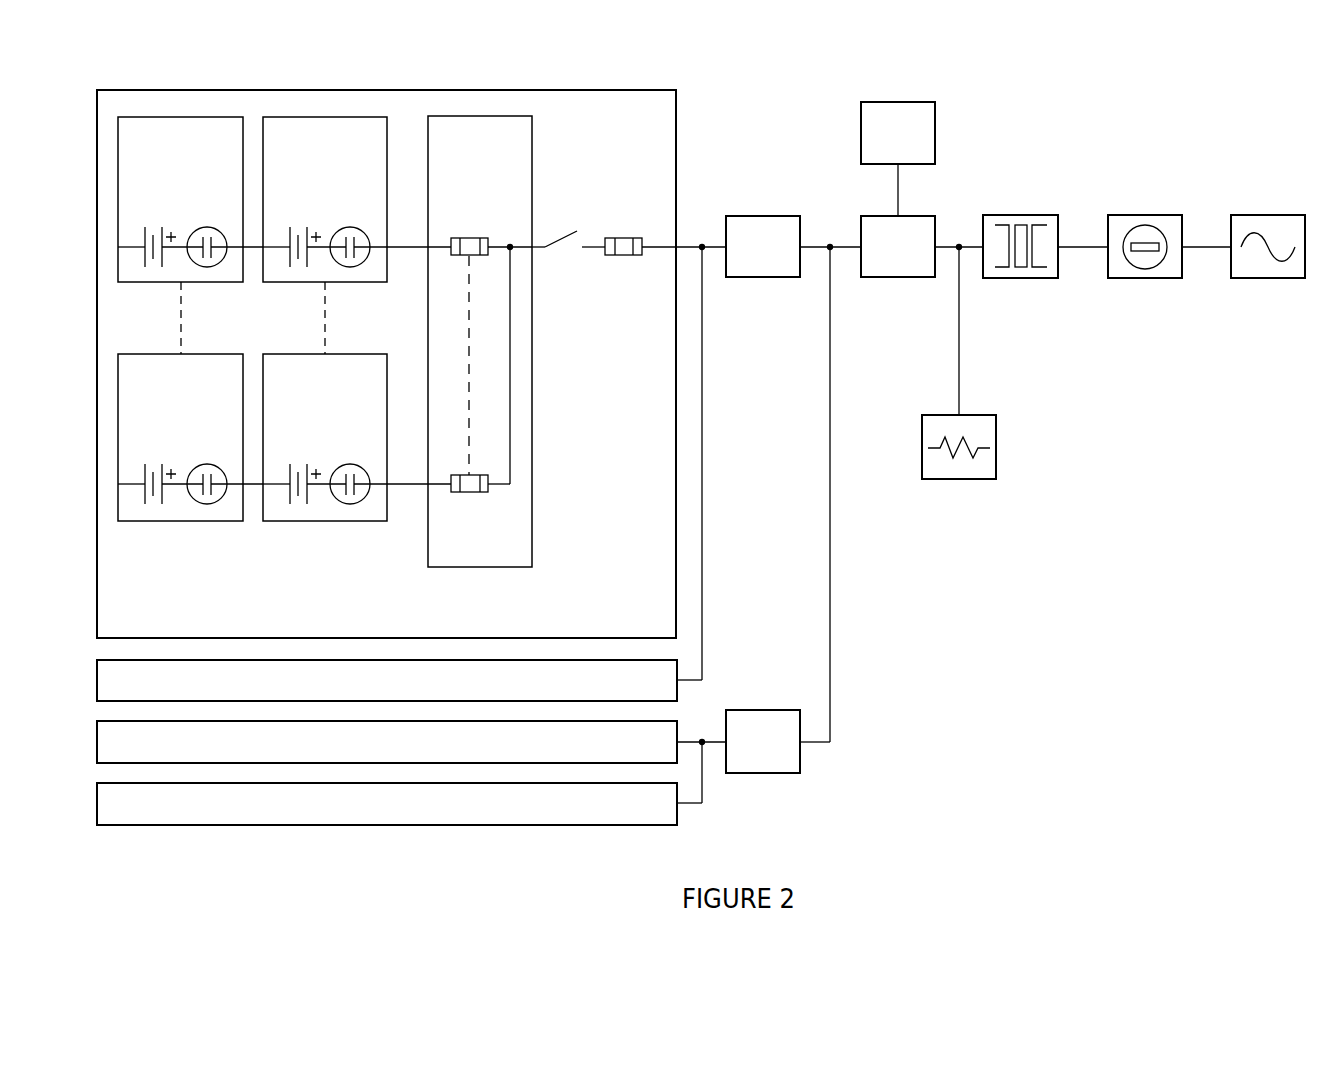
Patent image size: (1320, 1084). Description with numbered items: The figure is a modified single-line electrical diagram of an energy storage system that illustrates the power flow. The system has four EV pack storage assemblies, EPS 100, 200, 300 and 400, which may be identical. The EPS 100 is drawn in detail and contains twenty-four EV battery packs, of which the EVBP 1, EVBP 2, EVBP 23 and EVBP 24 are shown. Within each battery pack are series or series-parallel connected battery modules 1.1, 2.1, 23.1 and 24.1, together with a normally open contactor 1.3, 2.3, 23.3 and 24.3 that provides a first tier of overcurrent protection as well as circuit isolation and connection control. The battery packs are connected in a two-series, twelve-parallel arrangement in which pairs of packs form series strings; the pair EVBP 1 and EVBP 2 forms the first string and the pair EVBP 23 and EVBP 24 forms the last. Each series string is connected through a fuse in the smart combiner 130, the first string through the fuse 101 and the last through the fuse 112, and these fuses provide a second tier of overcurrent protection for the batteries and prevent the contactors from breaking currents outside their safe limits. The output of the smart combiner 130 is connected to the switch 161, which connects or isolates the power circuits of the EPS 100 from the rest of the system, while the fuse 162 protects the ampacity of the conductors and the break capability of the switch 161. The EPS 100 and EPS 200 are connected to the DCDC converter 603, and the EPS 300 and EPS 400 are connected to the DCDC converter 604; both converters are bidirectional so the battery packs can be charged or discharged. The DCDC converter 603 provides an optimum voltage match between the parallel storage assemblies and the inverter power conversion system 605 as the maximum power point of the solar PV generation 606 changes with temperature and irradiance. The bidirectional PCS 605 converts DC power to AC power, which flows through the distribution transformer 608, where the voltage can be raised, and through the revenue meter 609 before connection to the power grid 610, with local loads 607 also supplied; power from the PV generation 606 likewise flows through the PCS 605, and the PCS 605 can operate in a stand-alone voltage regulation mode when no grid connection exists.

The EV battery pack 1 is at (148, 149).
The EV battery pack 2 is at (292, 149).
The EV battery pack 23 is at (157, 386).
The EV battery pack 24 is at (300, 386).
The battery modules 1.1 is at (150, 222).
The contactor 1.3 is at (207, 222).
The battery modules 2.1 is at (293, 222).
The contactor 2.3 is at (351, 222).
The battery modules 23.1 is at (150, 458).
The contactor 23.3 is at (207, 458).
The battery modules 24.1 is at (293, 458).
The contactor 24.3 is at (351, 458).
The fuse 101 is at (468, 230).
The fuse 112 is at (468, 500).
The smart combiner 130 is at (535, 168).
The switch 161 is at (560, 230).
The fuse 162 is at (622, 260).
The EV pack storage assembly 100 is at (562, 631).
The EV pack storage assembly 200 is at (562, 692).
The EV pack storage assembly 300 is at (562, 754).
The EV pack storage assembly 400 is at (562, 814).
The DCDC converter 603 is at (763, 282).
The DCDC converter 604 is at (770, 777).
The power conversion system 605 is at (898, 282).
The solar PV generation 606 is at (855, 133).
The local loads 607 is at (960, 485).
The distribution transformer 608 is at (1022, 283).
The revenue meter 609 is at (1143, 283).
The power grid 610 is at (1268, 283).